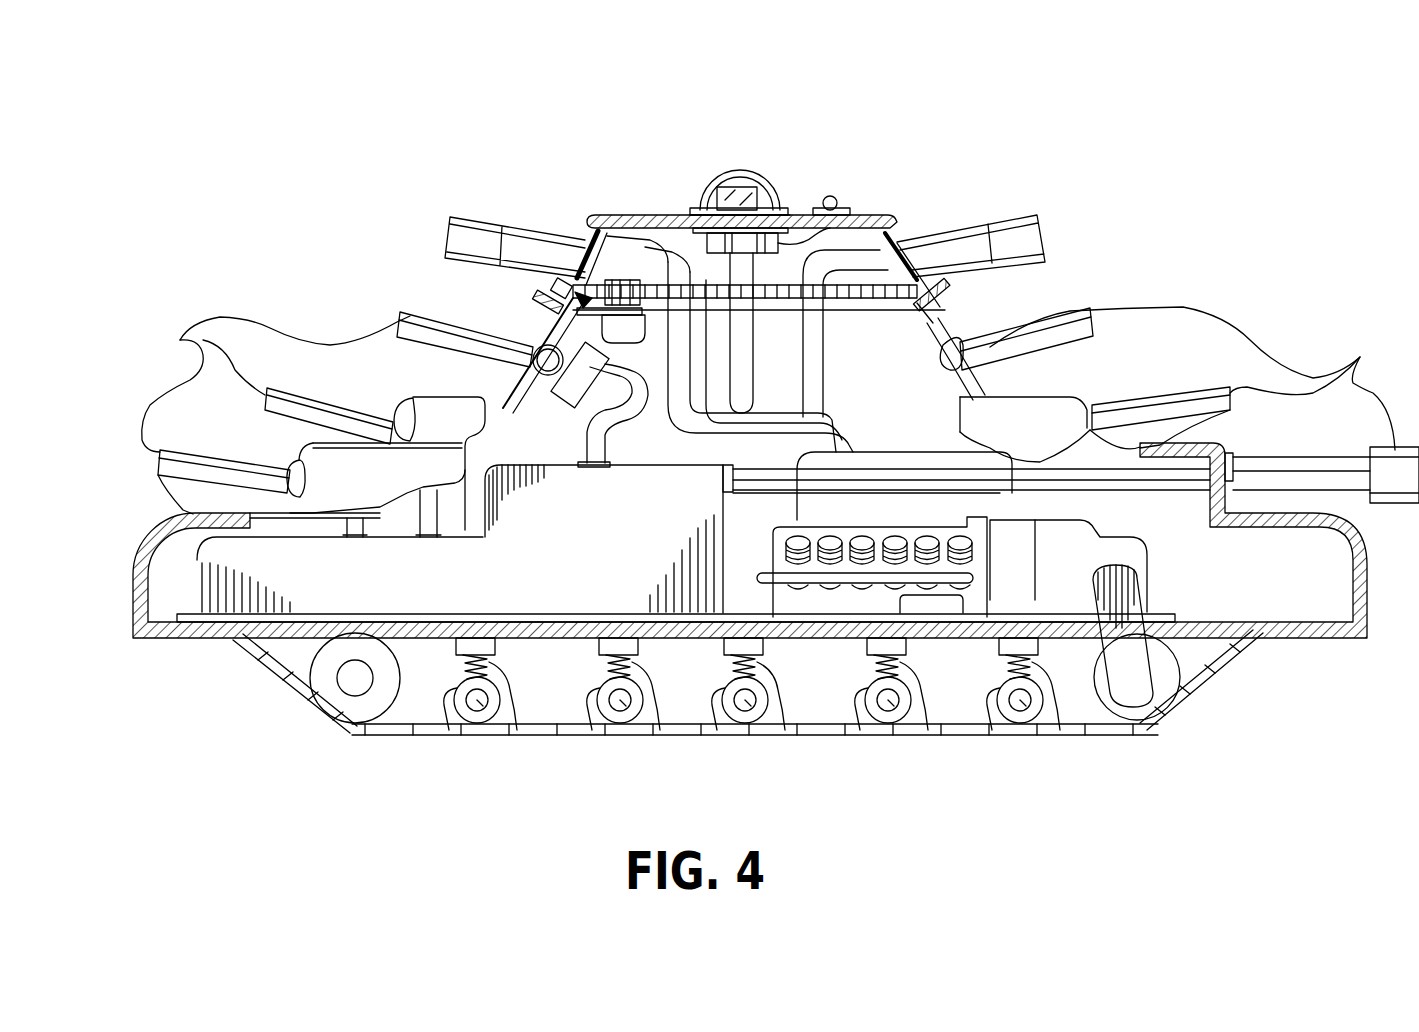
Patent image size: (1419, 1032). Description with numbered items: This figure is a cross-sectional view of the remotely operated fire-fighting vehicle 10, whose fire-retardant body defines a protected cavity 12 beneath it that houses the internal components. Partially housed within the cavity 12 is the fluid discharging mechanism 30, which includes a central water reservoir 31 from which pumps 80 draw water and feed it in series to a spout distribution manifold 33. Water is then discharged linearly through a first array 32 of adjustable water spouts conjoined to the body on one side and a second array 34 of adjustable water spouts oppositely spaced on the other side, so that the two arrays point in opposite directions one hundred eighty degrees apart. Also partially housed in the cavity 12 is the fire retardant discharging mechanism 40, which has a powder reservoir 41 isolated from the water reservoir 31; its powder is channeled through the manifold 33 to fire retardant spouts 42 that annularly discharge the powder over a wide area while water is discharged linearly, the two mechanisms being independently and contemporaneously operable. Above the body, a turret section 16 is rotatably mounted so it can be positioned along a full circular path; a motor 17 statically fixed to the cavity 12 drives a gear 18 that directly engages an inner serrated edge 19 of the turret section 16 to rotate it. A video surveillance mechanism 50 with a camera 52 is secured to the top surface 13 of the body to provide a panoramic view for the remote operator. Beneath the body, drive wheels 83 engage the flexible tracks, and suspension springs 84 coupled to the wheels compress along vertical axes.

The vehicle 10 is at (1085, 150).
The cavity 12 is at (1310, 593).
The top surface 13 is at (870, 214).
The turret section 16 is at (935, 297).
The motor 17 is at (552, 334).
The gear 18 is at (620, 282).
The inner serrated edge 19 is at (648, 216).
The fluid discharging mechanism 30 is at (352, 296).
The central water reservoir 31 is at (503, 468).
The first array of adjustable water spouts 32 is at (267, 415).
The spout distribution manifold 33 is at (717, 390).
The second array of adjustable water spouts 34 is at (1177, 384).
The fire retardant discharging mechanism 40 is at (853, 424).
The powder reservoir 41 is at (1020, 503).
The fire retardant spouts 42 is at (450, 238).
The video surveillance mechanism 50 is at (704, 160).
The camera 52 is at (745, 176).
The pumps 80 is at (1137, 677).
The drive wheels 83 is at (477, 712).
The suspension springs 84 is at (517, 730).